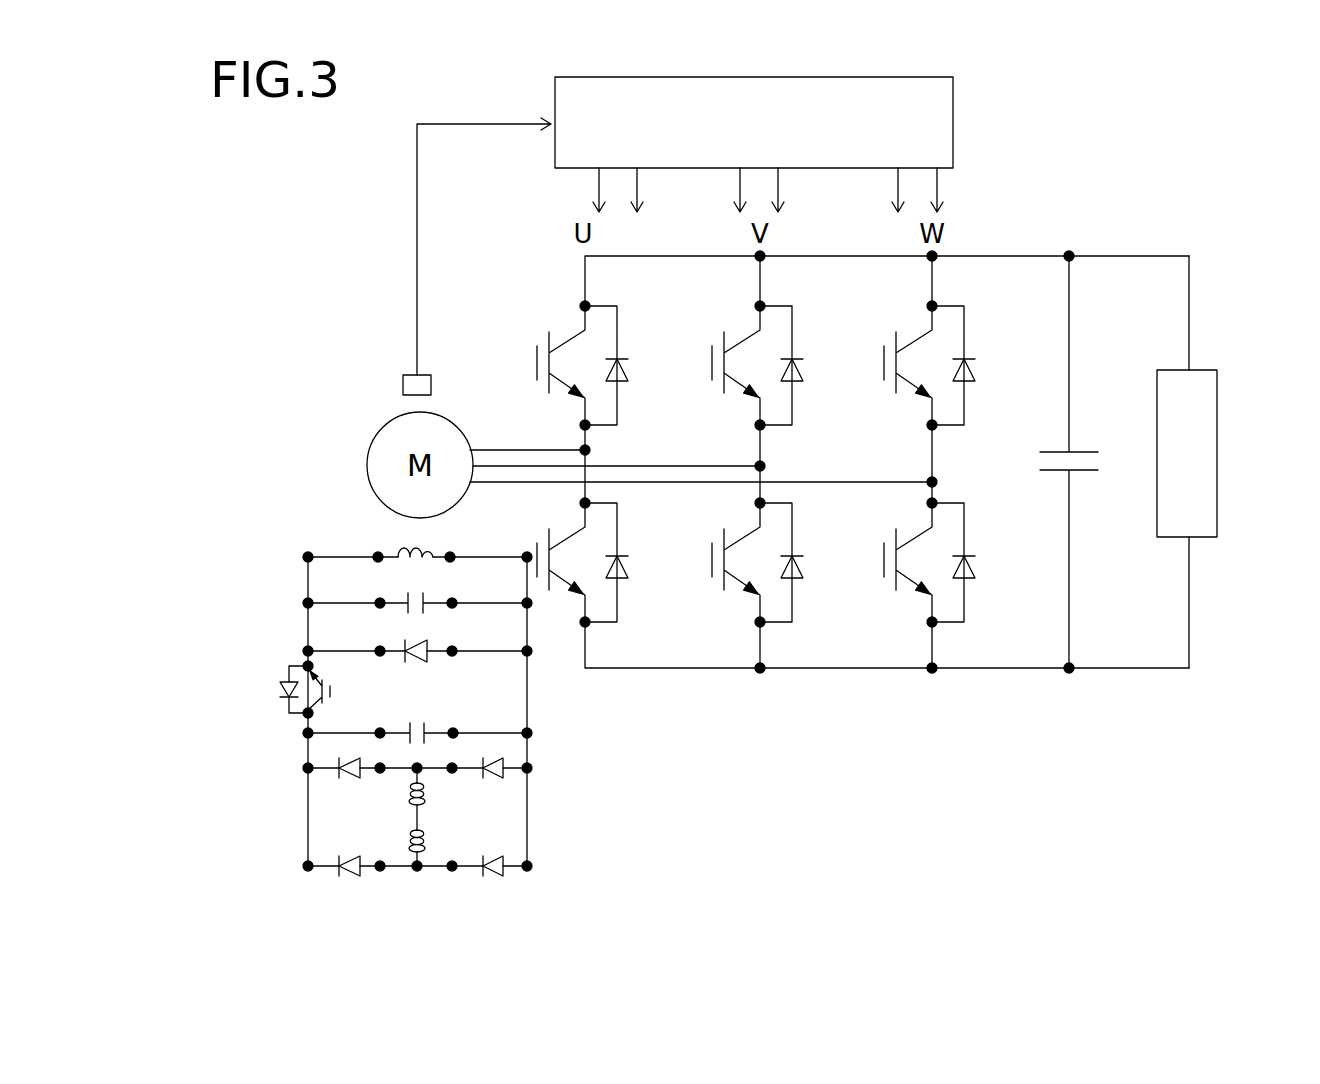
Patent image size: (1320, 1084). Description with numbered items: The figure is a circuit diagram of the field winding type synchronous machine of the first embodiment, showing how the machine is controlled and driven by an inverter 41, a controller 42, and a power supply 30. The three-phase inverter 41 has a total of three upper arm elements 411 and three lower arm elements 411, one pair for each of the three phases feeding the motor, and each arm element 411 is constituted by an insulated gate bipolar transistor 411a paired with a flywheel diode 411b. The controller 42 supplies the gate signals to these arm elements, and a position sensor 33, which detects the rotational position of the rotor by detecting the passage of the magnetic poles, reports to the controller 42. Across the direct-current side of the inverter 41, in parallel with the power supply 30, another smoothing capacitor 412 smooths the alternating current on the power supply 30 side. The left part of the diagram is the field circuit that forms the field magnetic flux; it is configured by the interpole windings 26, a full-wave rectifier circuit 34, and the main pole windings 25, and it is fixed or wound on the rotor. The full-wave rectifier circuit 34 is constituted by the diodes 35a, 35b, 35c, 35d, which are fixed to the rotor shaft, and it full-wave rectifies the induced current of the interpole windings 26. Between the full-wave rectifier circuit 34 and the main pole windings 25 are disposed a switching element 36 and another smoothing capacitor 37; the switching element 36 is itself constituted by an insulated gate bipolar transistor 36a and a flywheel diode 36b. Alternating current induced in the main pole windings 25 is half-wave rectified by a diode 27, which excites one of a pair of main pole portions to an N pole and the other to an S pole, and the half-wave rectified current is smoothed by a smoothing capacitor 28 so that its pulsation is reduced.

The controller 42 is at (934, 130).
The position sensor 33 is at (431, 385).
The power supply 30 is at (1205, 458).
The smoothing capacitor 412 is at (1083, 448).
The inverter 41 is at (863, 513).
The arm element 411 is at (961, 637).
The insulated gate bipolar transistor 411a is at (883, 597).
The flywheel diode 411b is at (975, 567).
The main pole windings 25 is at (408, 546).
The smoothing capacitor 28 is at (428, 612).
The diode 27 is at (418, 664).
The switching element 36 is at (240, 667).
The insulated gate bipolar transistor 36a is at (324, 690).
The flywheel diode 36b is at (280, 690).
The smoothing capacitor 37 is at (407, 746).
The full-wave rectifier circuit 34 is at (374, 695).
The diode 35a is at (352, 778).
The diode 35b is at (352, 876).
The diode 35c is at (490, 775).
The diode 35d is at (492, 877).
The interpole windings 26 is at (432, 838).